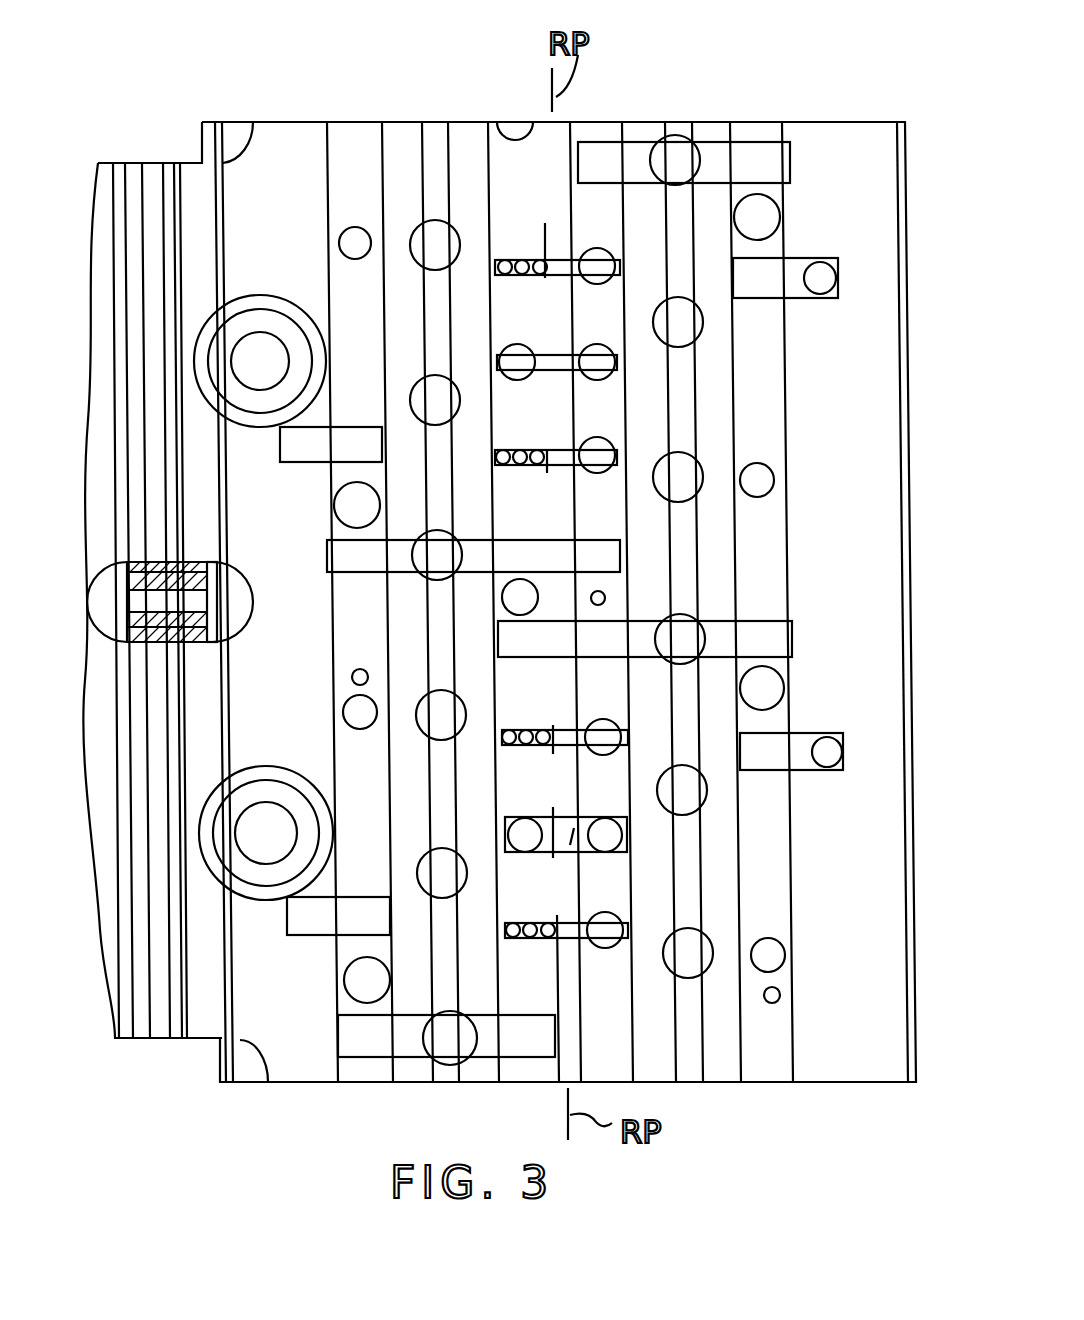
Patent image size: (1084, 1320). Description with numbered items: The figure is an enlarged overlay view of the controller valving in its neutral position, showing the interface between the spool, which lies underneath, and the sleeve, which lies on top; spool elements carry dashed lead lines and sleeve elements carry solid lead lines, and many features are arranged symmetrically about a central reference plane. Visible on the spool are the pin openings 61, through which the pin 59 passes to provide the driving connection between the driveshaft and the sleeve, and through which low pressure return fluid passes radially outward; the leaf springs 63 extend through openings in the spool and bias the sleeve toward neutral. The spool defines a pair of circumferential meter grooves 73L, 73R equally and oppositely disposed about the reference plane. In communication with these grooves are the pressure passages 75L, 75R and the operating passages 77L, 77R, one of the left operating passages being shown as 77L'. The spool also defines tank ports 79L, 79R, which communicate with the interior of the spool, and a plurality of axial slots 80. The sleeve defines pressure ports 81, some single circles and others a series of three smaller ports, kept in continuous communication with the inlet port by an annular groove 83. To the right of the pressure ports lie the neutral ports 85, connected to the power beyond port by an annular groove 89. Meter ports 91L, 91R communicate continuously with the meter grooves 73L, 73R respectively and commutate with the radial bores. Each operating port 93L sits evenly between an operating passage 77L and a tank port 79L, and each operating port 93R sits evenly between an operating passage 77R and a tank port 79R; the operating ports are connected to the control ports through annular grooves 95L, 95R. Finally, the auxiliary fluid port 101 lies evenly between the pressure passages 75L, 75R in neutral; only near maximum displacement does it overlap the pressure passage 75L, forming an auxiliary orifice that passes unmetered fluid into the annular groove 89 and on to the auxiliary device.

The pin 59 is at (255, 383).
The pin openings 61 is at (262, 318).
The leaf springs 63 is at (197, 656).
The meter groove 73L is at (450, 170).
The meter groove 73R is at (687, 213).
The pressure passages 75L is at (528, 562).
The pressure passages 75R is at (595, 160).
The operating passages 77L is at (473, 596).
The left bracket (lower) 77L' is at (432, 1075).
The operating passages 77R is at (755, 150).
The tank ports 79L is at (345, 448).
The tank ports 79R is at (820, 282).
The axial slots 80 is at (556, 258).
The pressure ports 81 is at (517, 360).
The annular groove 83 is at (535, 1063).
The neutral ports 85 is at (597, 283).
The annular groove 89 is at (637, 1043).
The meter ports 91L is at (422, 400).
The meter ports 91R is at (699, 330).
The operating ports 93L is at (357, 505).
The operating ports 93R is at (757, 217).
The annular groove 95L is at (327, 145).
The annular groove 95R is at (797, 1045).
The auxiliary fluid port 101 is at (606, 597).